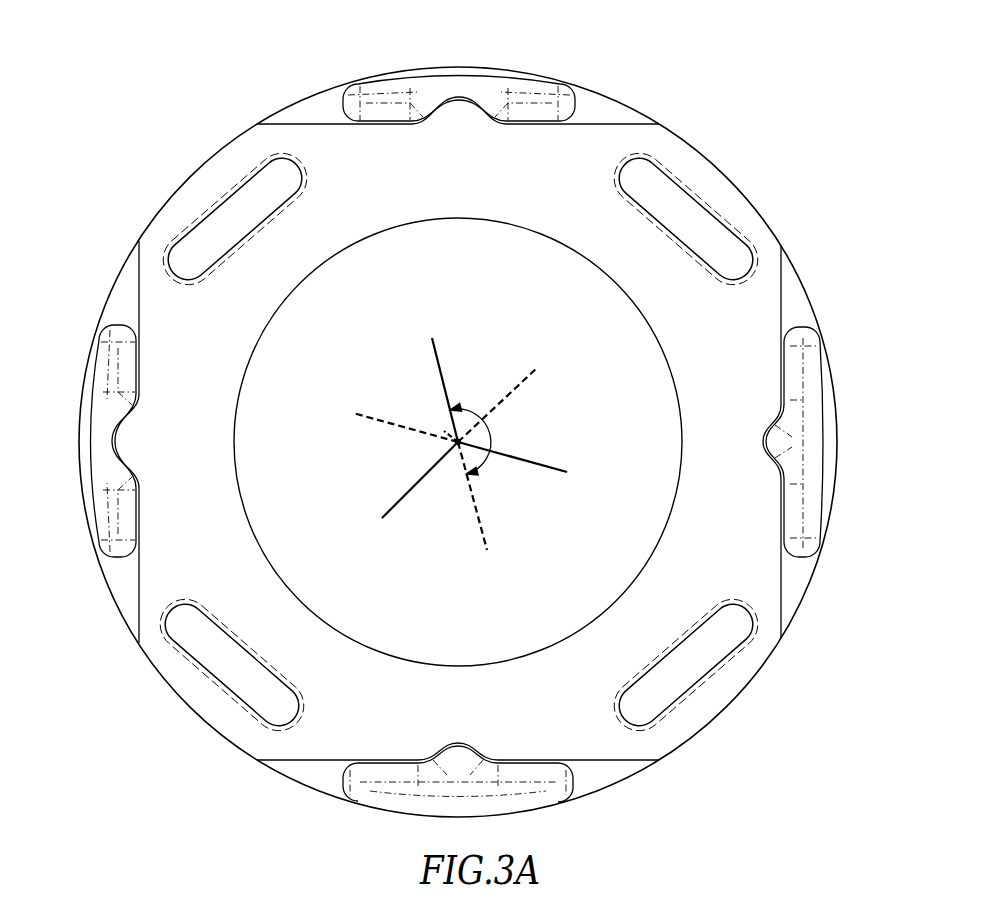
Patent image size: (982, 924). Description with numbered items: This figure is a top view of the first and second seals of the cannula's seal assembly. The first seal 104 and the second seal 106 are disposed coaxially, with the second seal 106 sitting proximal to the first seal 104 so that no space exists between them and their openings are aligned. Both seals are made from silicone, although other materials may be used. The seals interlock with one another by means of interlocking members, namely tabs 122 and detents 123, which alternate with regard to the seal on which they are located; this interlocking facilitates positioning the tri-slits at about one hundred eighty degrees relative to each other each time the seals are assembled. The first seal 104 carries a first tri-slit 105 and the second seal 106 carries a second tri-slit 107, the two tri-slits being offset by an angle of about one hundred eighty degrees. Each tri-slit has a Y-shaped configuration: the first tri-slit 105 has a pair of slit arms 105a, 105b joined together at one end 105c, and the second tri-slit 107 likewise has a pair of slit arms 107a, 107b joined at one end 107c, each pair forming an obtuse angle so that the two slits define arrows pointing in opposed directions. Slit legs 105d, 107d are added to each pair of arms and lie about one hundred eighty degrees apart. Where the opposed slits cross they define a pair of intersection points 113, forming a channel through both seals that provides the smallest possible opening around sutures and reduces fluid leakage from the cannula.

The first seal 104 is at (614, 100).
The second seal 106 is at (781, 281).
The tabs 122 is at (441, 116).
The detents 123 is at (462, 97).
The second tri-slit 107 is at (521, 462).
The slit arm 107a is at (563, 470).
The slit arm 107b is at (384, 517).
The joined end 107c is at (456, 456).
The slit leg 107d is at (433, 340).
The first tri-slit 105 is at (485, 418).
The slit arm 105a is at (538, 366).
The slit arm 105b is at (363, 418).
The joined end 105c is at (444, 430).
The slit leg 105d is at (488, 538).
The intersection points 113 is at (491, 434).